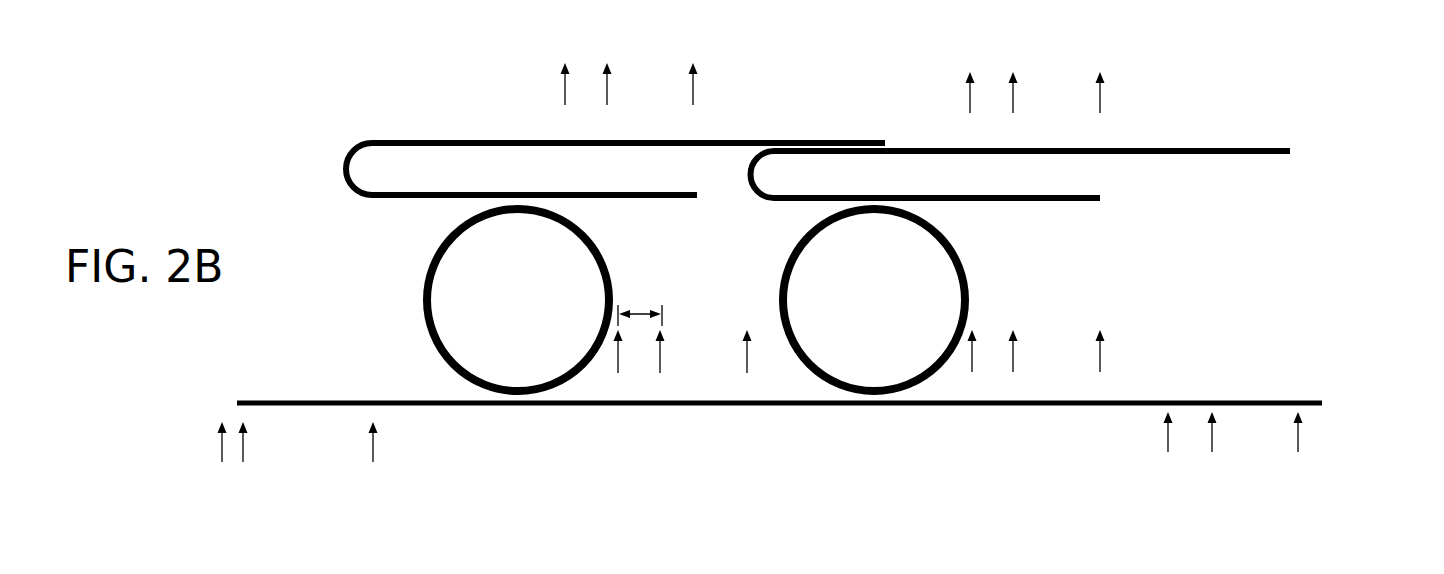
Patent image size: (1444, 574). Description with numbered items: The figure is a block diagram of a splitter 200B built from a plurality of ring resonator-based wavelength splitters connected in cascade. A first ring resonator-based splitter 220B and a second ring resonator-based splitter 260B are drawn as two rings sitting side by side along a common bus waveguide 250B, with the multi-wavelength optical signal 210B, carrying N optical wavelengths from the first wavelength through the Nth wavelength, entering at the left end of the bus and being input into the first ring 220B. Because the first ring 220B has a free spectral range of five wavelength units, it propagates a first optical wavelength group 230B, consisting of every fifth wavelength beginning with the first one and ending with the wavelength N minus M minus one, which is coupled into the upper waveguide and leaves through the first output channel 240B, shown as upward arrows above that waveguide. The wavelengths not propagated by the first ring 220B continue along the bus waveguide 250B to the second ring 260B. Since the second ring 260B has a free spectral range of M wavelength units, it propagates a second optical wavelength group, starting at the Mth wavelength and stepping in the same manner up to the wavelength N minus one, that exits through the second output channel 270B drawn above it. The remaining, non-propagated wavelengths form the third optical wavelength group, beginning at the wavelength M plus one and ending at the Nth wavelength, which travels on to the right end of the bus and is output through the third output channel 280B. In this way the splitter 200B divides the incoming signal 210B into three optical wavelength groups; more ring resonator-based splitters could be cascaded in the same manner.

The splitter 200B is at (1333, 104).
The multi-wavelength optical signal 210B is at (207, 448).
The first ring resonator-based splitter 220B is at (423, 318).
The first optical wavelength group 230B is at (670, 295).
The first output channel 240B is at (776, 60).
The bus waveguide 250B is at (751, 393).
The second ring resonator-based splitter 260B is at (950, 236).
The second output channel 270B is at (1113, 98).
The third output channel 280B is at (1325, 438).